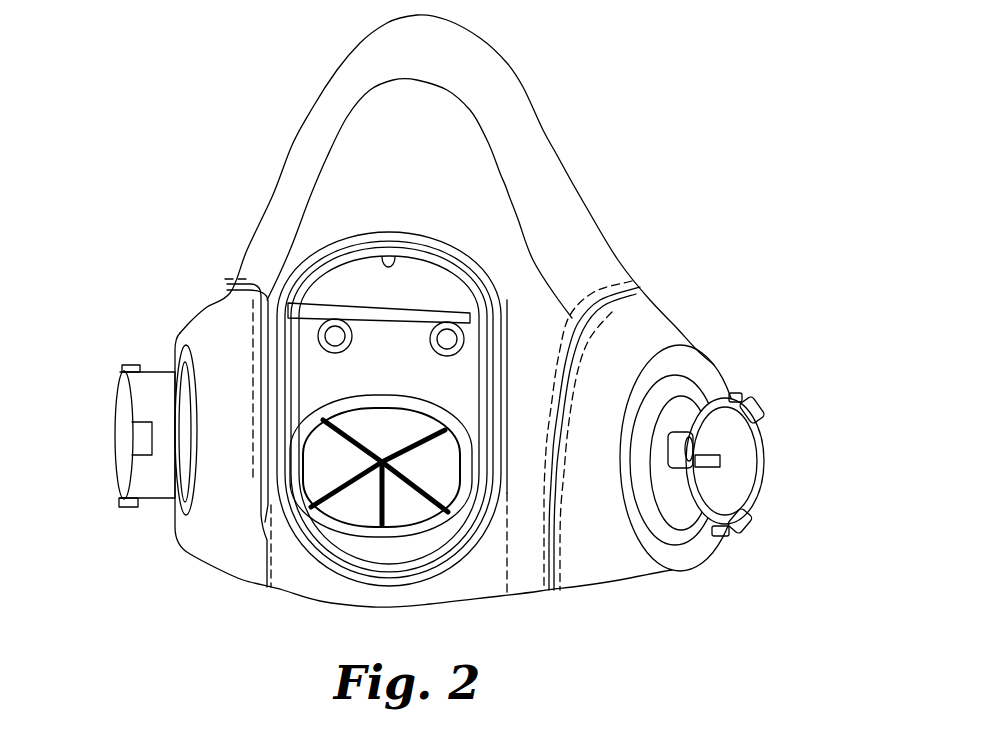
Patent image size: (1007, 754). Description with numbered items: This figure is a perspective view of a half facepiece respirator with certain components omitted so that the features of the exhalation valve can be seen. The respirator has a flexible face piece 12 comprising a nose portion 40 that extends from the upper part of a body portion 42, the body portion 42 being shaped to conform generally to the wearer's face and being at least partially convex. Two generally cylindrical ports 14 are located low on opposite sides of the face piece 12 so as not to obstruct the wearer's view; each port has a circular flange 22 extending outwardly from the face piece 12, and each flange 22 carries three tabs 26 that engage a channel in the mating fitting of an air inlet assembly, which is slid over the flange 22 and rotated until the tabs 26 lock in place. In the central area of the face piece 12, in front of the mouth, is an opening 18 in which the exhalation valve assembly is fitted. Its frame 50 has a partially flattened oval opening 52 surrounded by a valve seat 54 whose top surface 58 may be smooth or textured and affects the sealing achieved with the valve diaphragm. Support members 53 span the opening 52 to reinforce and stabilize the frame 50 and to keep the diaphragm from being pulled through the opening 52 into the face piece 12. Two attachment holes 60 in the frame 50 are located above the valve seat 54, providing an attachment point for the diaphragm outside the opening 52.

The face piece 12 is at (547, 167).
The nose portion 40 is at (523, 83).
The body portion 42 is at (633, 312).
The frame 50 is at (465, 365).
The opening 18 is at (391, 262).
The attachment holes 60 is at (335, 336).
The opening 52 is at (451, 483).
The valve seat 54 is at (337, 530).
The support members 53 is at (350, 446).
The top surface 58 is at (374, 532).
The circular flange 22 is at (692, 408).
The ports 14 is at (752, 452).
The tabs 26 is at (760, 413).